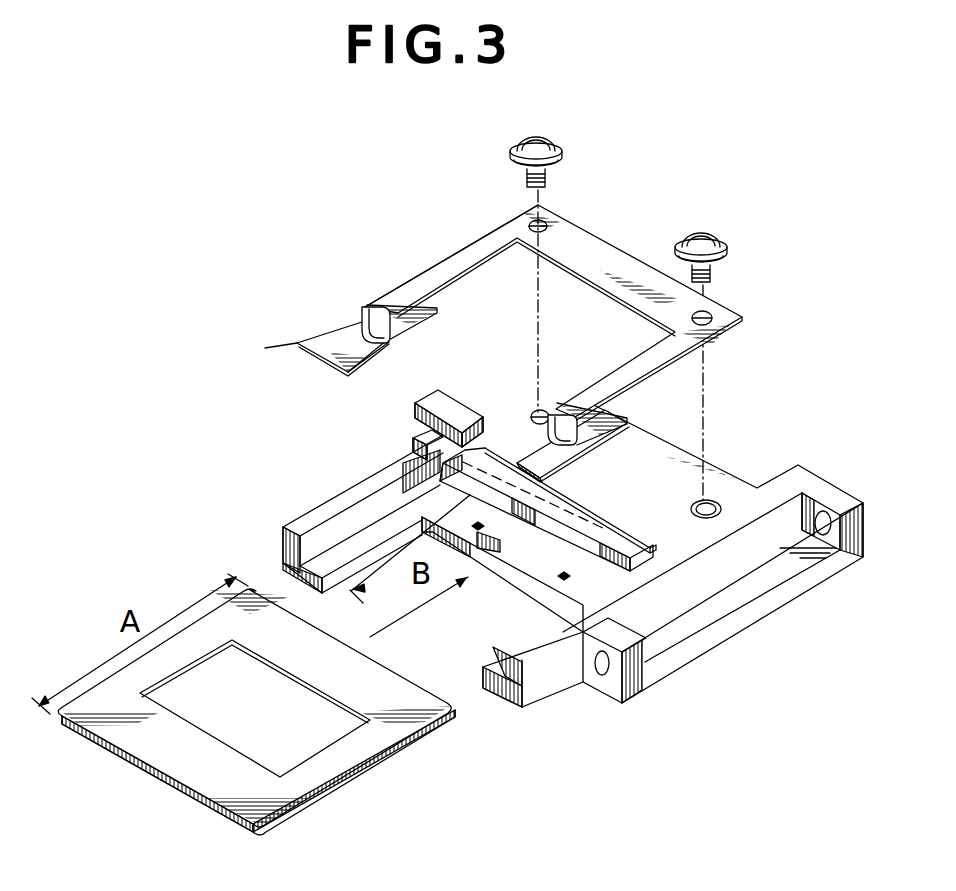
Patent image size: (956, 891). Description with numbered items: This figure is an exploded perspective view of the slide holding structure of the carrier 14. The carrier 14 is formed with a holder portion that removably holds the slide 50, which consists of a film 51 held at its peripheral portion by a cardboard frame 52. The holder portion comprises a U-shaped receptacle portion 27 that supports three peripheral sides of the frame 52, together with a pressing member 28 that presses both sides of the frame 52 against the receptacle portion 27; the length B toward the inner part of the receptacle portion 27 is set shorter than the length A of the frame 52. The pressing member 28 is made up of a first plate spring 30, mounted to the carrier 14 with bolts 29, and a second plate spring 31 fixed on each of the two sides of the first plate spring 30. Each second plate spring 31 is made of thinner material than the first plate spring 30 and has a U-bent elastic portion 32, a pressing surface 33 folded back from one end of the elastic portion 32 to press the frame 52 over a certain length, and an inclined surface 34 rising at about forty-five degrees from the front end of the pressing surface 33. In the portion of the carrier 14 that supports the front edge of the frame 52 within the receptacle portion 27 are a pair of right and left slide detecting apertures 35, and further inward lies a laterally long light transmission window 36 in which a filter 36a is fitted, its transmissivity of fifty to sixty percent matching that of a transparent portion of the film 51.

The carrier 14 is at (657, 453).
The U-shaped receptacle portion 27 is at (375, 528).
The pressing member 28 is at (497, 235).
The bolts 29 is at (546, 138).
The first plate spring 30 is at (450, 262).
The second plate spring 31 is at (358, 347).
The U-bent elastic portion 32 is at (362, 317).
The pressing surface 33 is at (368, 360).
The inclined surface 34 is at (260, 344).
The slide detecting apertures 35 is at (563, 578).
The light transmission window 36 is at (650, 540).
The filter 36a is at (603, 531).
The slide 50 is at (157, 730).
The film 51 is at (313, 730).
The frame 52 is at (258, 612).